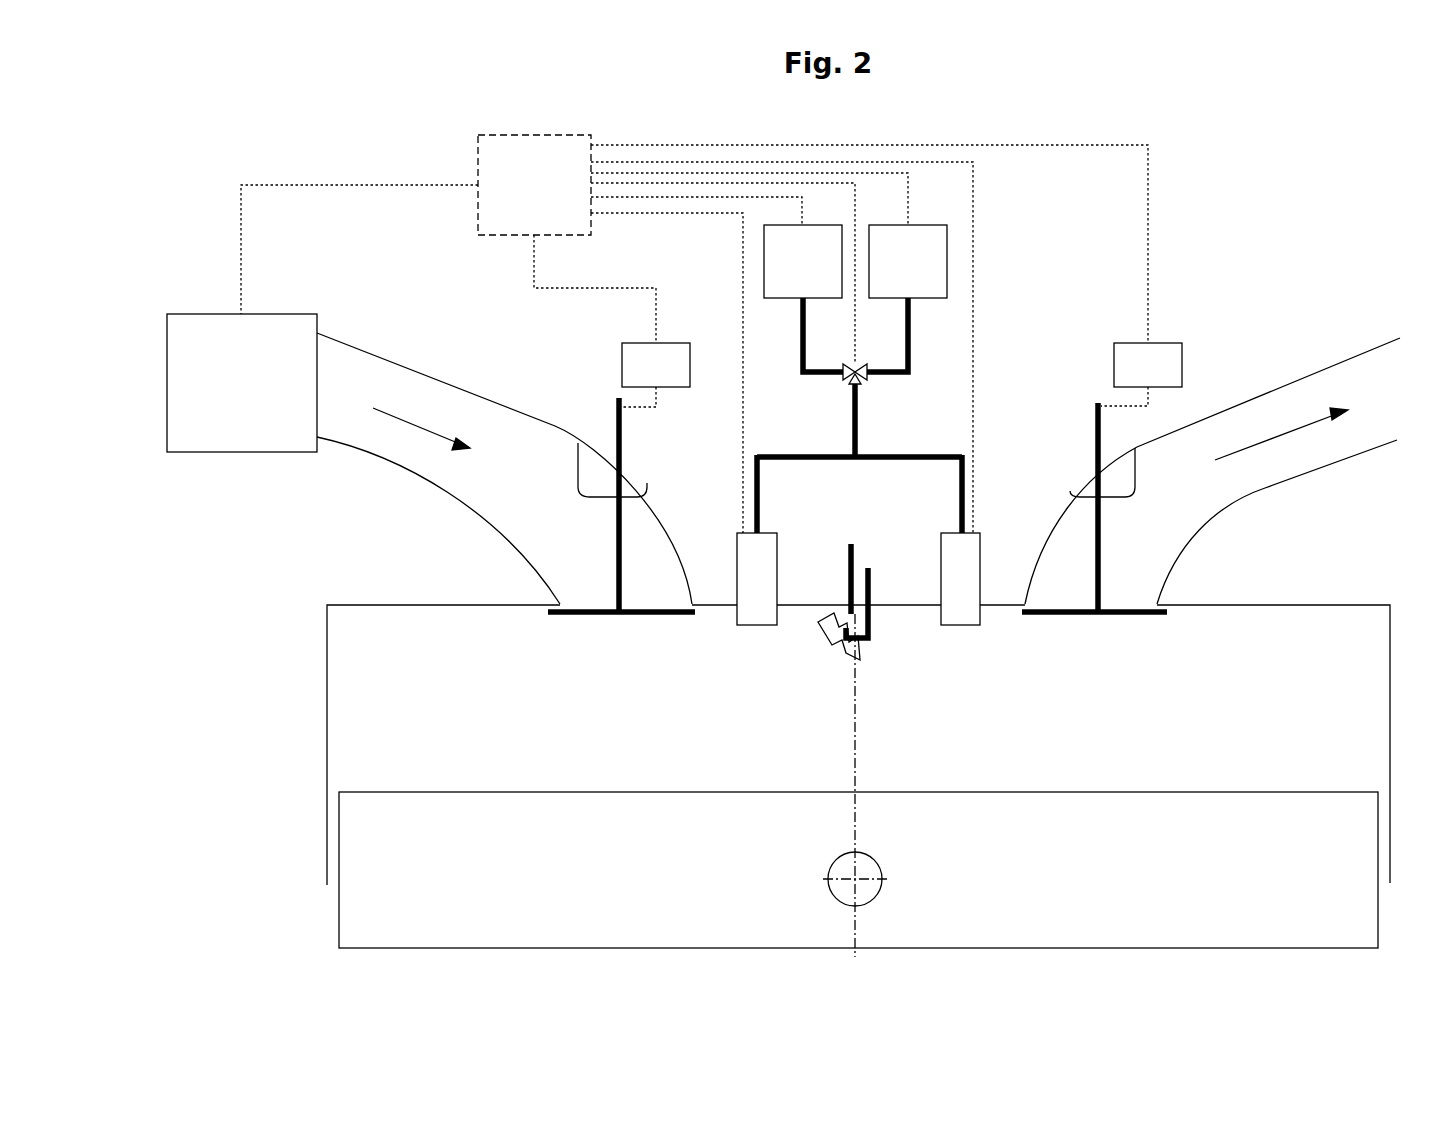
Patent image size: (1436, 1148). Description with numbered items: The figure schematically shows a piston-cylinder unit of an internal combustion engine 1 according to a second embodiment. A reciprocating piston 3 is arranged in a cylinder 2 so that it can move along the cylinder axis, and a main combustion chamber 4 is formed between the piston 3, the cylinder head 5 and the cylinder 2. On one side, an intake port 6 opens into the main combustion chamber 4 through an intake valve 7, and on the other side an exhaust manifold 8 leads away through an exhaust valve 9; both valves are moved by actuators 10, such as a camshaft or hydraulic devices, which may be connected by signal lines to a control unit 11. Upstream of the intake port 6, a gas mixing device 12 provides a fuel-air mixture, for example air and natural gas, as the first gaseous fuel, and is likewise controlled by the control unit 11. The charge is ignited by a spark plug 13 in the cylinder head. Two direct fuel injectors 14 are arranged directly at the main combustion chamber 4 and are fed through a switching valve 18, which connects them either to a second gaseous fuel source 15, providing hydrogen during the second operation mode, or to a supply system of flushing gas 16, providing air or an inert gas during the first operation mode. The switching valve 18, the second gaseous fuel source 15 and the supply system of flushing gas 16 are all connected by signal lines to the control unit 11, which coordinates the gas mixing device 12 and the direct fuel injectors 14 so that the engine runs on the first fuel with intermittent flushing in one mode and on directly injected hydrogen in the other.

The internal combustion engine 1 is at (1197, 222).
The cylinder 2 is at (327, 673).
The piston 3 is at (501, 883).
The main combustion chamber 4 is at (594, 718).
The cylinder head 5 is at (1061, 279).
The intake port 6 is at (504, 488).
The intake valve 7 is at (613, 463).
The exhaust manifold 8 is at (1166, 506).
The exhaust valve 9 is at (1097, 440).
The actuator 10 is at (902, 375).
The control unit 11 is at (518, 204).
The gas mixing device 12 is at (223, 398).
The spark plug 13 is at (888, 648).
The direct fuel injector 14 is at (762, 618).
The second gaseous fuel source 15 is at (804, 298).
The supply system of flushing gas 16 is at (906, 298).
The switching valve 18 is at (860, 375).